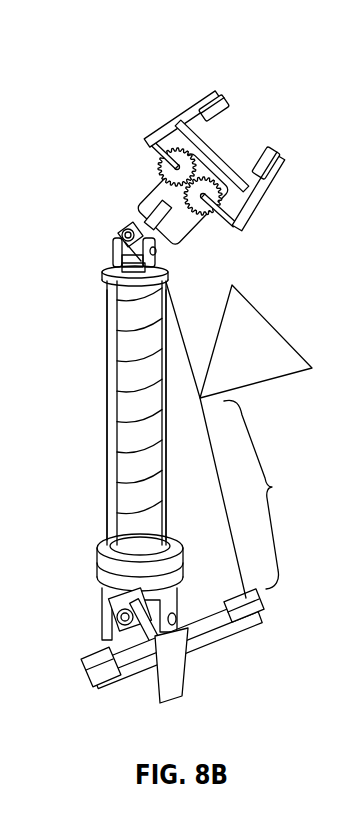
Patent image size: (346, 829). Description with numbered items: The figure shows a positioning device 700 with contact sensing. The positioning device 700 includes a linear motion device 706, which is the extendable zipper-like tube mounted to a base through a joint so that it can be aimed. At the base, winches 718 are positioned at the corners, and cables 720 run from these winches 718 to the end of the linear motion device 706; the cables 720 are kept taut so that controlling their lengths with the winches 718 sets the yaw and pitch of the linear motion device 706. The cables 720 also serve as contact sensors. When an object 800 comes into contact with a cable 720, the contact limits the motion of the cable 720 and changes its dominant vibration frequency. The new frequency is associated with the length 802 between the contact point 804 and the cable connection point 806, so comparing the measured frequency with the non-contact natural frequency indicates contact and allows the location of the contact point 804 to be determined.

The positioning device 700 is at (161, 60).
The linear motion device 706 is at (128, 316).
The winch 718 is at (95, 672).
The cable 720 is at (104, 427).
The object 800 is at (279, 317).
The length 802 is at (267, 494).
The contact point 804 is at (207, 410).
The cable connection point 806 is at (256, 587).